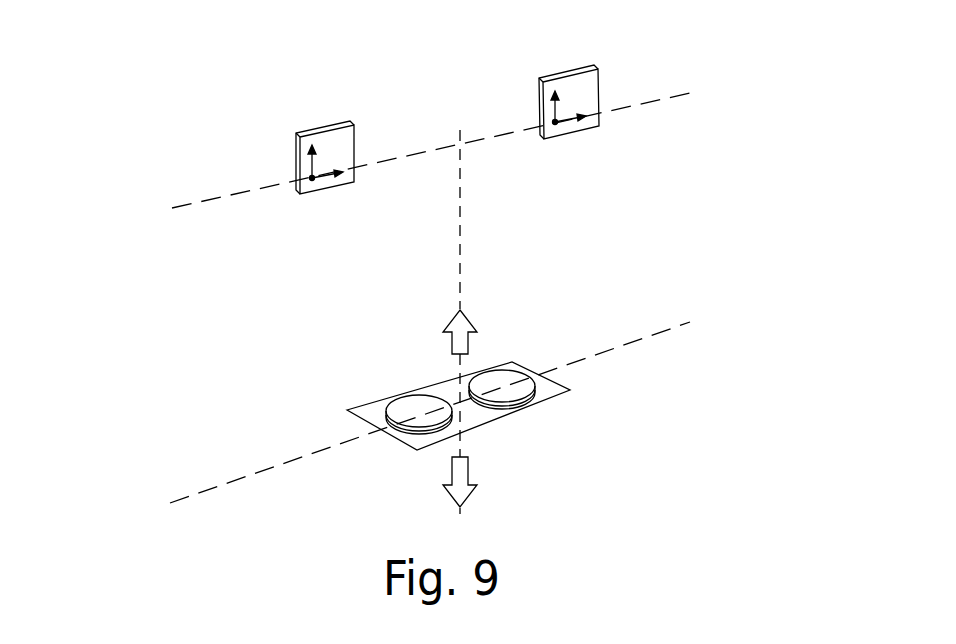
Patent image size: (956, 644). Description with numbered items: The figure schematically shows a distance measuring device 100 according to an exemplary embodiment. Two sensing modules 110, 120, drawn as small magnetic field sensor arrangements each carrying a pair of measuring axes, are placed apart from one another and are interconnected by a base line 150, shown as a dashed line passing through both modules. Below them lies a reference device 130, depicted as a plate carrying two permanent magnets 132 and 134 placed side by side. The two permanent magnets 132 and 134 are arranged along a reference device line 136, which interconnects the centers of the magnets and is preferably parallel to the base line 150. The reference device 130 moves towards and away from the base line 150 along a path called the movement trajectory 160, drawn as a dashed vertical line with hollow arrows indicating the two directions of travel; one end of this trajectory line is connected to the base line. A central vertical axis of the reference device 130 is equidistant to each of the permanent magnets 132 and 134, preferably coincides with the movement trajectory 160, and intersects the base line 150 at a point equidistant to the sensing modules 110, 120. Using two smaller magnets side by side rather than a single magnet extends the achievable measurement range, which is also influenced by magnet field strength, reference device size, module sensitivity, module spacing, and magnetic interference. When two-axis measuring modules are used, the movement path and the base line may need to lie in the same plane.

The distance measuring device 100 is at (216, 102).
The first sensing module 110 is at (356, 142).
The second sensing module 120 is at (602, 90).
The reference device 130 is at (560, 397).
The permanent magnet 132 is at (424, 436).
The permanent magnet 134 is at (507, 408).
The reference device line 136 is at (648, 330).
The base line 150 is at (657, 102).
The movement trajectory 160 is at (460, 183).